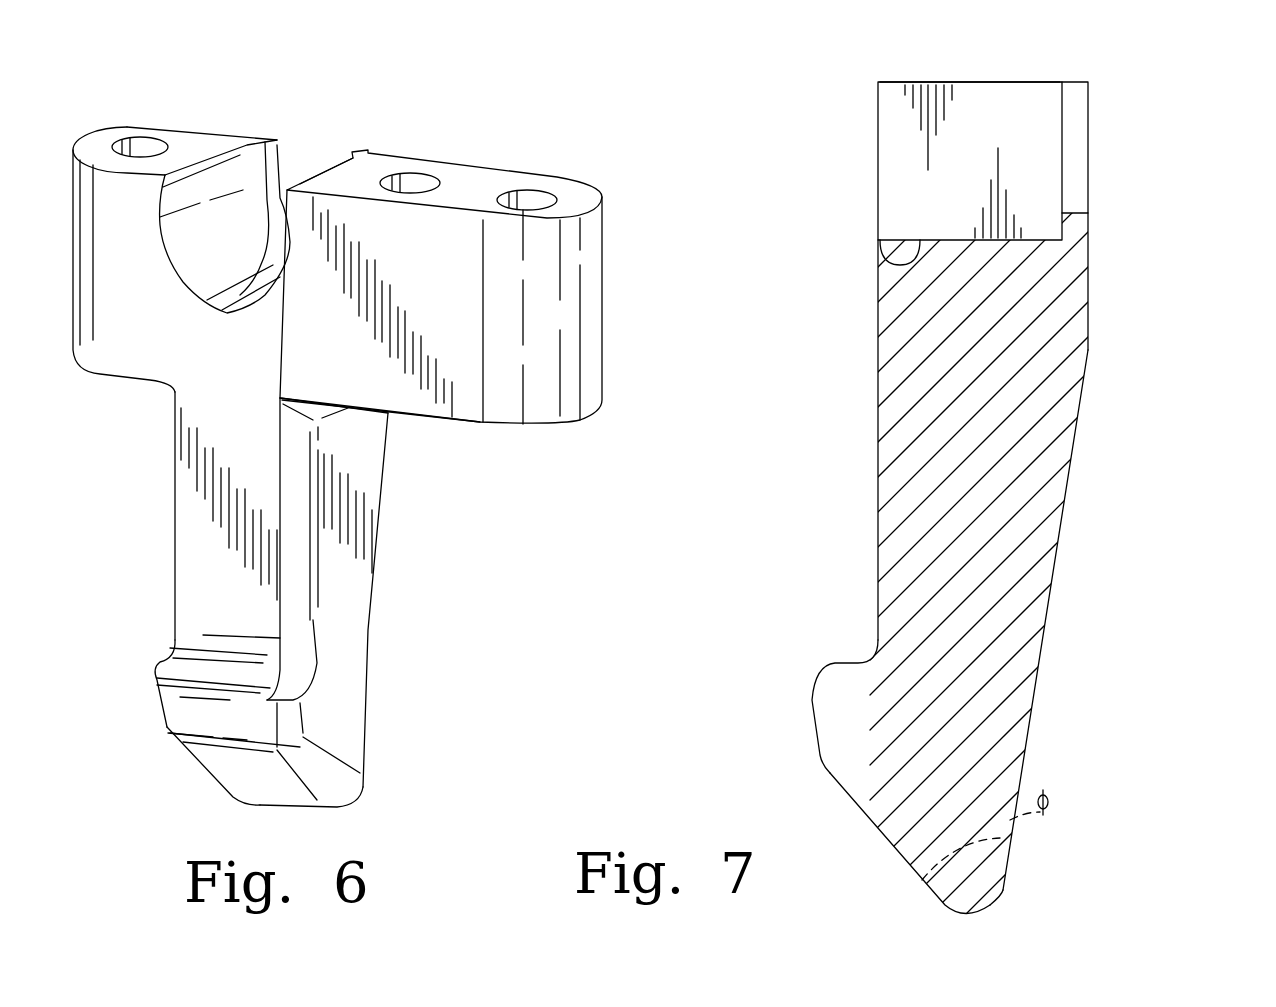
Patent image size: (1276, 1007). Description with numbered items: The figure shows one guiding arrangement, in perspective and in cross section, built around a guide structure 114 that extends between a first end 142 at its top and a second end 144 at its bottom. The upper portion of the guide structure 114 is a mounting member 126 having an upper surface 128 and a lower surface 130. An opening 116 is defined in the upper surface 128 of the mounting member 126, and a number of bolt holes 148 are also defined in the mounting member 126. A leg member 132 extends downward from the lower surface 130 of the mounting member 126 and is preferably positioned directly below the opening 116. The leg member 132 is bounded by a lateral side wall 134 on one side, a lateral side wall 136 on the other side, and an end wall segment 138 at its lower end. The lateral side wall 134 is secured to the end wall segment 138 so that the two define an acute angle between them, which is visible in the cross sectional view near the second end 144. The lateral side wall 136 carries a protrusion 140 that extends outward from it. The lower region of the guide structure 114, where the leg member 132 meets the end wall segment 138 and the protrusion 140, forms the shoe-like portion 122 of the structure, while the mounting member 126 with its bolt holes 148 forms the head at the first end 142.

In FIG. 6, the guide structure 114 is at (625, 160).
In FIG. 7, the guide structure 114 is at (1132, 148).
In FIG. 6, the opening 116 is at (182, 262).
In FIG. 6, the shoe portion 122 is at (378, 802).
In FIG. 7, the shoe portion 122 is at (1022, 866).
In FIG. 6, the mounting member 126 is at (590, 313).
In FIG. 7, the mounting member 126 is at (905, 178).
In FIG. 6, the upper surface 128 is at (373, 158).
In FIG. 7, the upper surface 128 is at (895, 82).
In FIG. 6, the lower surface 130 is at (470, 425).
In FIG. 7, the lower surface 130 is at (897, 265).
In FIG. 6, the leg member 132 is at (355, 628).
In FIG. 7, the leg member 132 is at (1075, 395).
In FIG. 6, the lateral side wall 134 is at (385, 485).
In FIG. 7, the lateral side wall 134 is at (1070, 478).
In FIG. 6, the lateral side wall 136 is at (180, 522).
In FIG. 7, the lateral side wall 136 is at (878, 468).
In FIG. 6, the end wall segment 138 is at (275, 783).
In FIG. 7, the end wall segment 138 is at (910, 870).
In FIG. 6, the protrusion 140 is at (165, 663).
In FIG. 7, the protrusion 140 is at (830, 672).
In FIG. 6, the first end 142 is at (308, 120).
In FIG. 7, the first end 142 is at (1050, 70).
In FIG. 6, the second end 144 is at (178, 782).
In FIG. 7, the second end 144 is at (1003, 913).
In FIG. 6, the bolt holes 148 is at (138, 148).